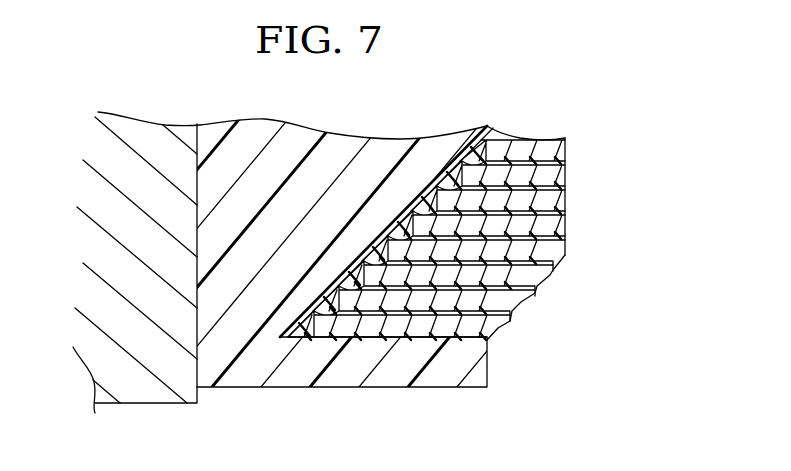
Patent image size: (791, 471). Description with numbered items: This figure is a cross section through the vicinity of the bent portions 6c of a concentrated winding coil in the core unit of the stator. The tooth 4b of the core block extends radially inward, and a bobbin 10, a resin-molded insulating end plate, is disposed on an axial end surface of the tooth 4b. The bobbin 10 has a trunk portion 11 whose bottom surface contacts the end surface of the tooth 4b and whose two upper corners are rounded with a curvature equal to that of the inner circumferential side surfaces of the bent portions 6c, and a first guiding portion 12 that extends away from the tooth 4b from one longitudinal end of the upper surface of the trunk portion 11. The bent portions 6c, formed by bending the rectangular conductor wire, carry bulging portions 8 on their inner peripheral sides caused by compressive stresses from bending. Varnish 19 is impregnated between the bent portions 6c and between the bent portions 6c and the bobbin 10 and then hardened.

The tooth 4b is at (150, 355).
The bobbin 10 is at (320, 136).
The trunk portion 11 is at (290, 262).
The first guiding portion 12 is at (363, 374).
The bulging portion 8 is at (441, 192).
The bent portion 6c is at (558, 256).
The varnish 19 is at (497, 313).